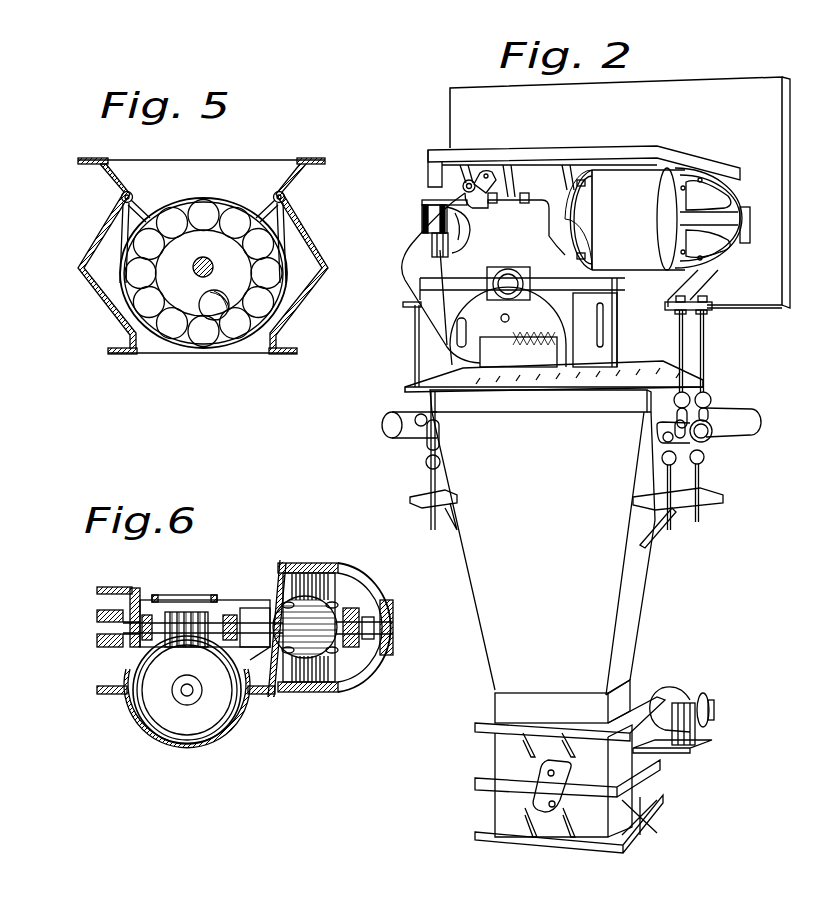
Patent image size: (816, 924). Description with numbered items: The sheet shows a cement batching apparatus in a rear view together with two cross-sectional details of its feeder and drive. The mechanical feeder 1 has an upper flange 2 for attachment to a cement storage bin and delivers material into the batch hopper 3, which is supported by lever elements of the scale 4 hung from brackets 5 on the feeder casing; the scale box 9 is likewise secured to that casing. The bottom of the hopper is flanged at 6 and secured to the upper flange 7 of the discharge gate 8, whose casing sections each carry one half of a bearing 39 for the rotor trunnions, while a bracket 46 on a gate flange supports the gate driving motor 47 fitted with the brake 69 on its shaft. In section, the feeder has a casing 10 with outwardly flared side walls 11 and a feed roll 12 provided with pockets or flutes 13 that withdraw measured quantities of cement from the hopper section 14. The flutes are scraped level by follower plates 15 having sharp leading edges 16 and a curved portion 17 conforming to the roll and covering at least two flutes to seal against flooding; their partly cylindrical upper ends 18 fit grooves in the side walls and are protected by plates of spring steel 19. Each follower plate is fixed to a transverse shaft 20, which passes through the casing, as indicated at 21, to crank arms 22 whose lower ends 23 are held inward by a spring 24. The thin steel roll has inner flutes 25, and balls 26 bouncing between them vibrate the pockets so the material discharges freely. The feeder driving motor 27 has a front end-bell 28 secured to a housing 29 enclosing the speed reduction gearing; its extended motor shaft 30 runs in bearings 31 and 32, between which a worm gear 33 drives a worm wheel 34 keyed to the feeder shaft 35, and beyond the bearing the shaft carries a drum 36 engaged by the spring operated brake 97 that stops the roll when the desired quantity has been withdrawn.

In FIG. 5, the mechanical feeder 1 is at (91, 199).
In FIG. 2, the mechanical feeder 1 is at (410, 258).
In FIG. 5, the upper flange 2 is at (325, 162).
In FIG. 2, the upper flange 2 is at (440, 148).
In FIG. 2, the batch hopper 3 is at (542, 556).
In FIG. 2, the scale lever elements 4 is at (723, 428).
In FIG. 2, the brackets 5 is at (703, 313).
In FIG. 2, the hopper bottom flange 6 is at (487, 712).
In FIG. 2, the gate upper flange 7 is at (483, 731).
In FIG. 2, the discharge gate 8 is at (522, 768).
In FIG. 2, the scale box 9 is at (533, 126).
In FIG. 5, the casing 10 is at (300, 183).
In FIG. 5, the side walls 11 is at (80, 263).
In FIG. 5, the feed roll 12 is at (178, 198).
In FIG. 5, the pockets or flutes 13 is at (240, 205).
In FIG. 5, the hopper section 14 is at (249, 160).
In FIG. 5, the follower plates 15 is at (133, 223).
In FIG. 5, the sharp leading edges 16 is at (148, 218).
In FIG. 5, the curved portion 17 is at (117, 280).
In FIG. 5, the partly cylindrical upper ends 18 is at (283, 205).
In FIG. 5, the spring steel plates 19 is at (277, 191).
In FIG. 5, the transverse shaft 20 is at (128, 192).
In FIG. 2, the shaft extensions 21 is at (469, 179).
In FIG. 2, the crank arms 22 is at (482, 172).
In FIG. 2, the lower ends of crank arms 23 is at (617, 318).
In FIG. 2, the spring 24 is at (557, 337).
In FIG. 5, the inner flutes 25 is at (150, 283).
In FIG. 5, the balls 26 is at (230, 288).
In FIG. 6, the feeder driving motor 27 is at (324, 565).
In FIG. 2, the feeder driving motor 27 is at (638, 220).
In FIG. 6, the front end-bell 28 is at (275, 572).
In FIG. 2, the front end-bell 28 is at (570, 238).
In FIG. 6, the housing 29 is at (163, 596).
In FIG. 2, the housing 29 is at (528, 228).
In FIG. 6, the motor shaft 30 is at (248, 640).
In FIG. 6, the bearing 31 is at (140, 597).
In FIG. 6, the bearing 32 is at (237, 610).
In FIG. 6, the worm gear 33 is at (197, 583).
In FIG. 6, the worm wheel 34 is at (203, 672).
In FIG. 5, the feeder shaft 35 is at (194, 264).
In FIG. 6, the feeder shaft 35 is at (185, 697).
In FIG. 6, the brake drum 36 is at (97, 606).
In FIG. 2, the bearing 39 is at (555, 787).
In FIG. 2, the bracket 46 is at (700, 748).
In FIG. 2, the gate driving motor 47 is at (677, 690).
In FIG. 2, the brake 69 is at (714, 710).
In FIG. 2, the spring operated brake 97 is at (422, 220).